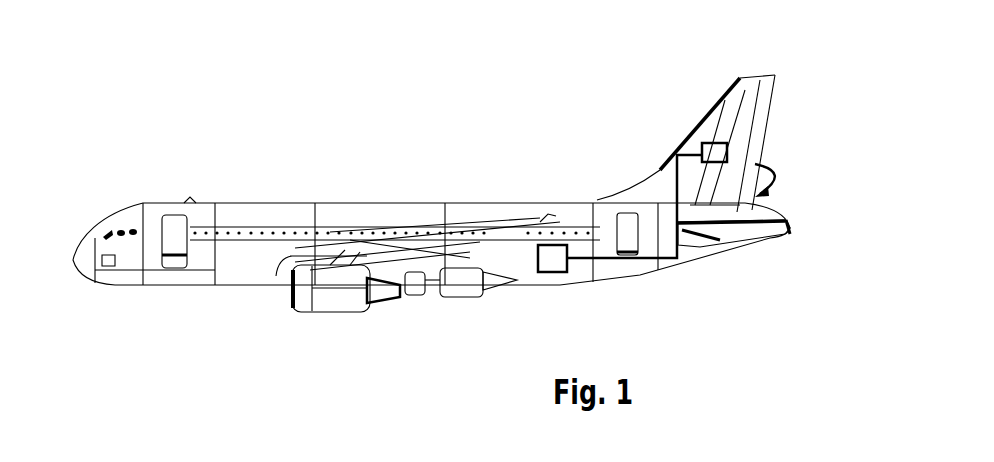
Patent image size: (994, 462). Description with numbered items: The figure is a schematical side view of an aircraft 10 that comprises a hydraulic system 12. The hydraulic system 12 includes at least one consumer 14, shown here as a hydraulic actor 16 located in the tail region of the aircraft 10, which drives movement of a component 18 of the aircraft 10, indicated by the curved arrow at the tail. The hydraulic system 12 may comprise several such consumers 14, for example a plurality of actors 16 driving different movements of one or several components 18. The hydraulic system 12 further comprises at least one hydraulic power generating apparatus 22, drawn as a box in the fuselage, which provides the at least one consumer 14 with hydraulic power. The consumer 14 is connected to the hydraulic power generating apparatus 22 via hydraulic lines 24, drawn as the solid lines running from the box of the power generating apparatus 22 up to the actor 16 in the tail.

The aircraft 10 is at (133, 187).
The hydraulic system 12 is at (640, 295).
The consumer 14 is at (695, 133).
The hydraulic actor 16 is at (714, 143).
The component 18 is at (753, 143).
The hydraulic power generating apparatus 22 is at (550, 243).
The hydraulic lines 24 is at (710, 247).